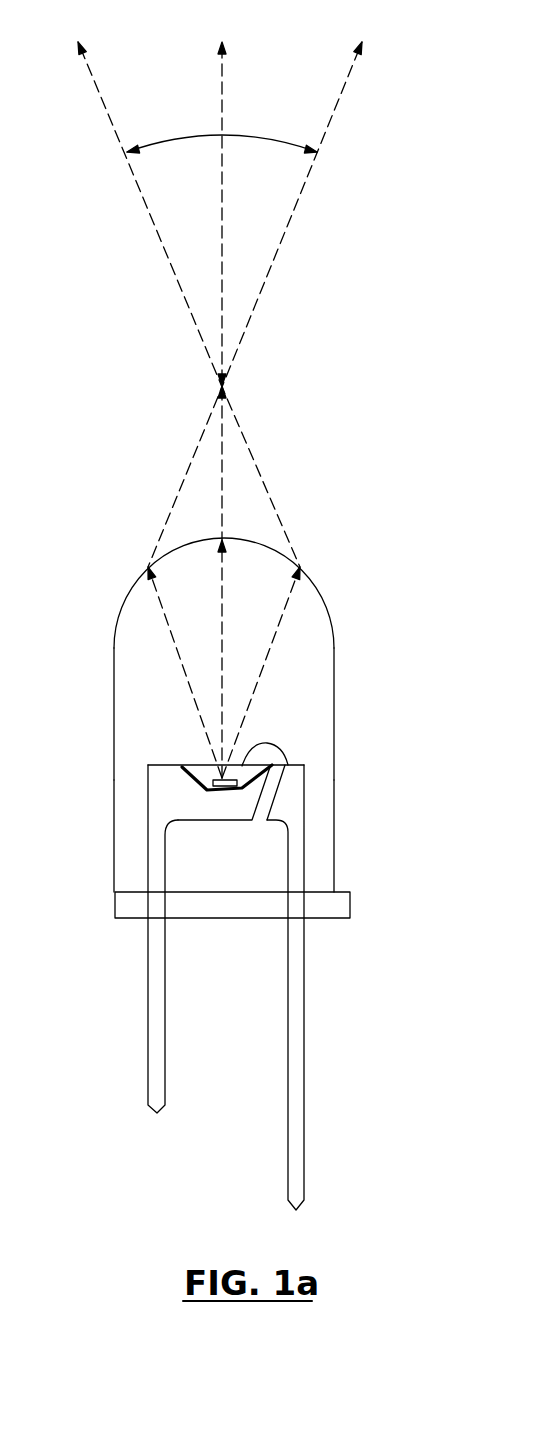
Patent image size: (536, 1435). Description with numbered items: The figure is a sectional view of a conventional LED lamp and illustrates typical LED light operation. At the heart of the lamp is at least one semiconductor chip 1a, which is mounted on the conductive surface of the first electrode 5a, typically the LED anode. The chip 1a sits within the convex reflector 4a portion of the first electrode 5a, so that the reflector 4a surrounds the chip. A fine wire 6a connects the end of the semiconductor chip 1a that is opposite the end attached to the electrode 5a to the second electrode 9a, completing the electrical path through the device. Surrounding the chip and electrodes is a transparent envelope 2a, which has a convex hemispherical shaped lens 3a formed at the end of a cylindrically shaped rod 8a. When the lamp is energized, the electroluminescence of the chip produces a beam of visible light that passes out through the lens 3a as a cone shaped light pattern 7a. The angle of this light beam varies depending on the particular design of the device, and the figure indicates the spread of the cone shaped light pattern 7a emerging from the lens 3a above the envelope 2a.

The semiconductor chip 1a is at (180, 767).
The transparent envelope 2a is at (335, 645).
The convex hemispherical shaped lens 3a is at (140, 578).
The convex reflector 4a is at (222, 776).
The first electrode 5a is at (147, 980).
The fine wire 6a is at (290, 740).
The cone shaped light pattern 7a is at (175, 137).
The cylindrically shaped rod 8a is at (335, 822).
The second electrode 9a is at (305, 980).